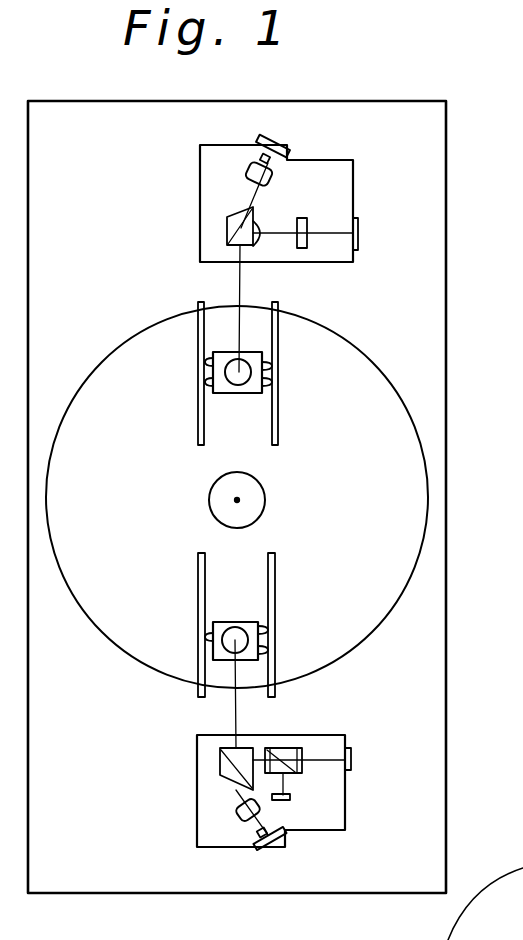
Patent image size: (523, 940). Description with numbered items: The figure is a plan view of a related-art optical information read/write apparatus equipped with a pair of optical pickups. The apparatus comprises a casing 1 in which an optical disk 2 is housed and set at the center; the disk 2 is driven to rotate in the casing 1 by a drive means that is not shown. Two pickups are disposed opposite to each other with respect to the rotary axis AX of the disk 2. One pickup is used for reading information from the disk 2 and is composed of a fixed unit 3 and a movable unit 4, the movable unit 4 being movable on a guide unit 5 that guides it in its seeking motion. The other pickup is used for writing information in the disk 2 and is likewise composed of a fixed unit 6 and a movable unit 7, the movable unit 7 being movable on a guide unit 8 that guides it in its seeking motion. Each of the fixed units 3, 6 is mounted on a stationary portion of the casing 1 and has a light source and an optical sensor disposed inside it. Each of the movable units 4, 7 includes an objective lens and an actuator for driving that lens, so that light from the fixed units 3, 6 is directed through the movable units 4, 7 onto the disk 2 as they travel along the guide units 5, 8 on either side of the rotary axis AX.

The casing 1 is at (447, 589).
The optical disk 2 is at (412, 492).
The fixed unit 3 is at (333, 735).
The movable unit 4 is at (258, 640).
The guide unit 5 is at (272, 576).
The fixed unit 6 is at (352, 191).
The movable unit 7 is at (258, 386).
The guide unit 8 is at (280, 341).
The rotary axis AX is at (239, 500).